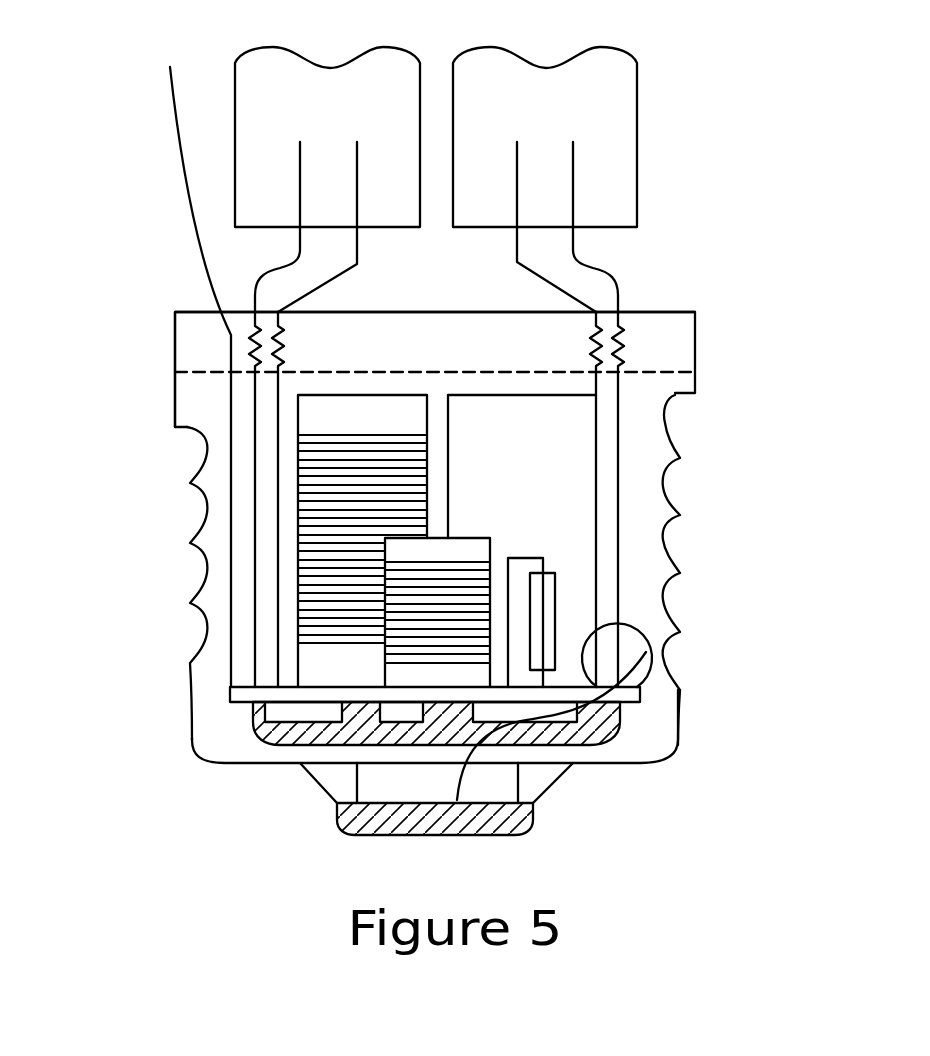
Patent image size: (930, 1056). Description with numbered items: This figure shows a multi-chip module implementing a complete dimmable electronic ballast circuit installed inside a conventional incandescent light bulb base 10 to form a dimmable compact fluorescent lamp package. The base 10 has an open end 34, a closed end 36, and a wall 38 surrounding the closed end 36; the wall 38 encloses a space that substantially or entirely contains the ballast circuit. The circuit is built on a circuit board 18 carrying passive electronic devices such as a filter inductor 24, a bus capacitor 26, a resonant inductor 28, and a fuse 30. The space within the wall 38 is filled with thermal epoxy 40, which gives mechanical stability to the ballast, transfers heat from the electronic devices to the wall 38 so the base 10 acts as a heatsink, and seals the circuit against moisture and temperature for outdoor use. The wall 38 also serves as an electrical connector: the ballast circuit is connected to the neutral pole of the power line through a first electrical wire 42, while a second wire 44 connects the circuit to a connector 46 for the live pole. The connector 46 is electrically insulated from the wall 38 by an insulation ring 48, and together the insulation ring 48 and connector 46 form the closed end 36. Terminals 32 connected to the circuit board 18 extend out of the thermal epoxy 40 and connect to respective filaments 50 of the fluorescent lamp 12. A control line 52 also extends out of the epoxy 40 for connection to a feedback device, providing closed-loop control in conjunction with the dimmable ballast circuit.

The base 10 is at (683, 398).
The fluorescent lamp 12 is at (610, 158).
The circuit board 18 is at (230, 692).
The filter inductor 24 is at (460, 547).
The bus capacitor 26 is at (553, 425).
The resonant inductor 28 is at (383, 412).
The fuse 30 is at (523, 567).
The terminals 32 is at (253, 515).
The open end 34 is at (210, 312).
The closed end 36 is at (596, 806).
The wall 38 is at (190, 603).
The thermal epoxy 40 is at (217, 417).
The first electrical wire 42 is at (566, 687).
The second wire 44 is at (640, 655).
The connector 46 is at (353, 827).
The insulation ring 48 is at (547, 785).
The filaments 50 is at (256, 268).
The control line 52 is at (170, 110).